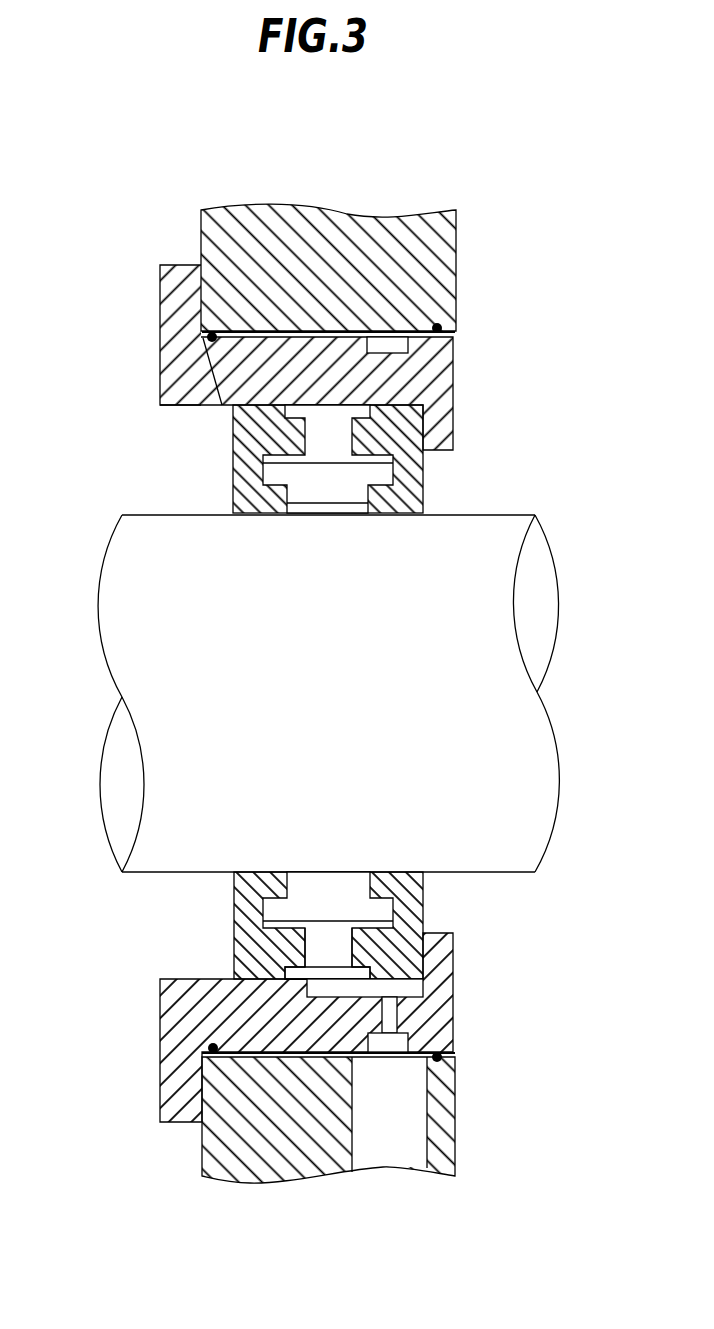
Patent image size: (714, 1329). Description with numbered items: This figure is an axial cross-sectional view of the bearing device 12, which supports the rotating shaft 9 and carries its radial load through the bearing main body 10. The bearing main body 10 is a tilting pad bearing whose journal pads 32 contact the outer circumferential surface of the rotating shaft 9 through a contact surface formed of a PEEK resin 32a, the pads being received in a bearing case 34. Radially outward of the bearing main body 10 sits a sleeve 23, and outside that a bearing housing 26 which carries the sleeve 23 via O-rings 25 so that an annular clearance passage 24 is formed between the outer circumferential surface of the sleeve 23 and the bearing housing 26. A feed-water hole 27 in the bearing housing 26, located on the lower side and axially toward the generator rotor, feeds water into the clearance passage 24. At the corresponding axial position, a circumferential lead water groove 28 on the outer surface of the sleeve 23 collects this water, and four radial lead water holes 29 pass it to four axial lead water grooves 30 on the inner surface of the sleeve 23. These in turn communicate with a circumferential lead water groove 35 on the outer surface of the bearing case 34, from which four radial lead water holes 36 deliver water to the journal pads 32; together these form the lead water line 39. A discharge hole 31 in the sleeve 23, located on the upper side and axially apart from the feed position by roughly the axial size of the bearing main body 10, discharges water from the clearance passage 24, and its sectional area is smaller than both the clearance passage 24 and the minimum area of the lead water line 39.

The rotating shaft 9 is at (316, 701).
The bearing main body 10 is at (335, 459).
The bearing device 12 is at (121, 284).
The sleeve 23 is at (455, 402).
The clearance passage 24 is at (298, 330).
The O-rings 25 is at (439, 326).
The bearing housing 26 is at (459, 254).
The feed-water hole 27 is at (410, 1125).
The circumferential lead water groove 28 is at (400, 1043).
The radial lead water holes 29 is at (392, 1017).
The axial lead water grooves 30 is at (413, 985).
The discharge hole 31 is at (210, 385).
The journal pads 32 is at (338, 498).
The PEEK resin 32a is at (306, 514).
The bearing case 34 is at (234, 454).
The circumferential lead water groove 35 is at (293, 975).
The radial lead water holes 36 is at (325, 949).
The lead water line 39 is at (522, 955).